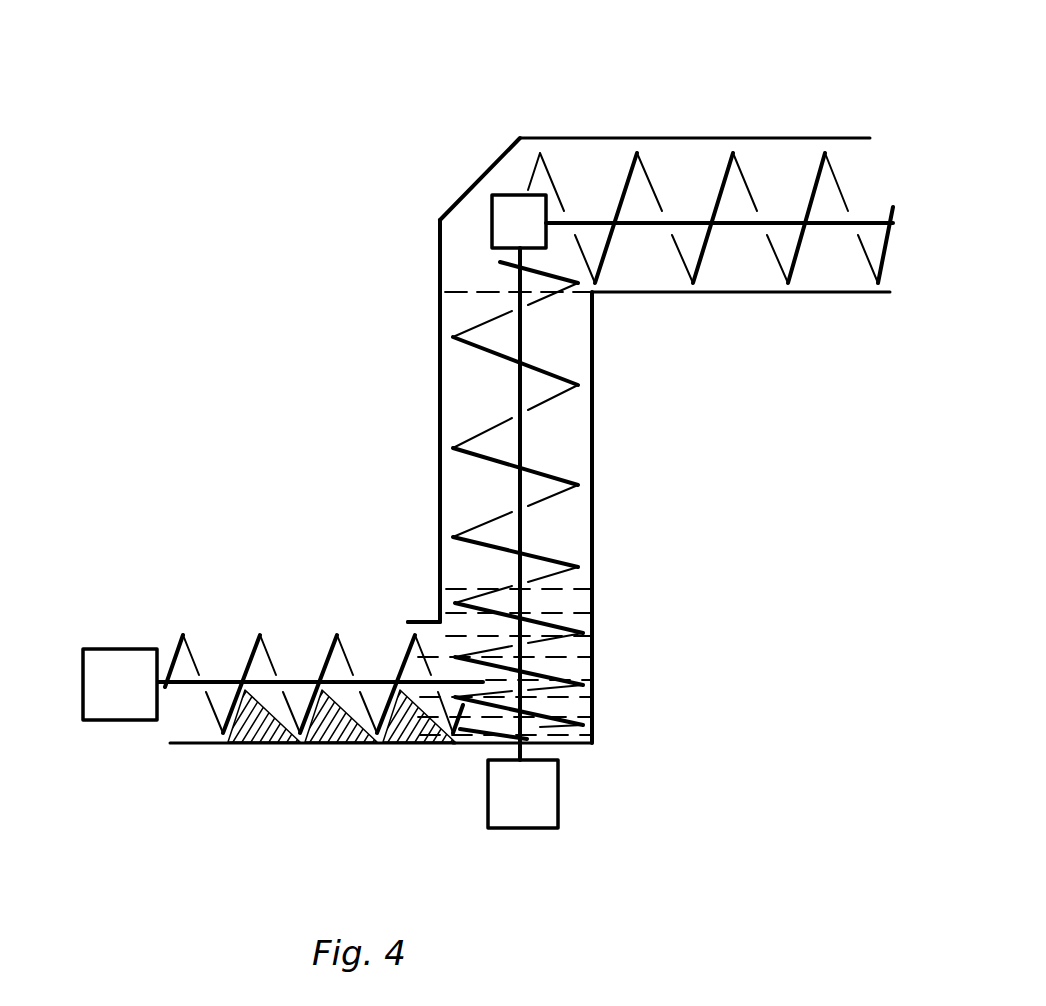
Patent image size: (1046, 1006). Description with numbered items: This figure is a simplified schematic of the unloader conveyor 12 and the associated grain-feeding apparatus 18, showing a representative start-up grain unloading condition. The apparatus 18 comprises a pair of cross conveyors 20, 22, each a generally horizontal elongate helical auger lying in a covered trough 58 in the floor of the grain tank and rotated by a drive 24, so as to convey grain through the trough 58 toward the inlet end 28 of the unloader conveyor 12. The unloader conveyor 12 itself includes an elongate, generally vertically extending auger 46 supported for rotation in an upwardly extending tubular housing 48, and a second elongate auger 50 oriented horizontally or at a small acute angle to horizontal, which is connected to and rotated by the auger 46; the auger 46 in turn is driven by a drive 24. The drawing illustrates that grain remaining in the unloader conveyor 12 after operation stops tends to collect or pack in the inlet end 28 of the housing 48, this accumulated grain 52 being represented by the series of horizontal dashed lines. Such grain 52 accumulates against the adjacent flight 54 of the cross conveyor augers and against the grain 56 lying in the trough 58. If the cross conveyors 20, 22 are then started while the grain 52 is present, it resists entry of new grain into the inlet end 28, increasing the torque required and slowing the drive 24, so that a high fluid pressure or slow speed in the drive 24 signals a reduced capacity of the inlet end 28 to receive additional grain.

The unloader conveyor 12 is at (650, 134).
The apparatus 18 is at (161, 548).
The cross conveyor 20 is at (347, 640).
The cross conveyor 22 is at (320, 684).
The drive 24 is at (130, 720).
The inlet end 28 is at (596, 730).
The auger 46 is at (562, 472).
The tubular housing 48 is at (596, 510).
The auger 50 is at (702, 263).
The grain 52 is at (583, 670).
The flight 54 is at (427, 640).
The grain 56 is at (413, 730).
The trough 58 is at (197, 736).